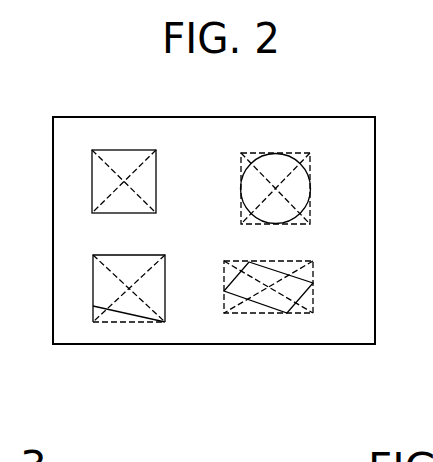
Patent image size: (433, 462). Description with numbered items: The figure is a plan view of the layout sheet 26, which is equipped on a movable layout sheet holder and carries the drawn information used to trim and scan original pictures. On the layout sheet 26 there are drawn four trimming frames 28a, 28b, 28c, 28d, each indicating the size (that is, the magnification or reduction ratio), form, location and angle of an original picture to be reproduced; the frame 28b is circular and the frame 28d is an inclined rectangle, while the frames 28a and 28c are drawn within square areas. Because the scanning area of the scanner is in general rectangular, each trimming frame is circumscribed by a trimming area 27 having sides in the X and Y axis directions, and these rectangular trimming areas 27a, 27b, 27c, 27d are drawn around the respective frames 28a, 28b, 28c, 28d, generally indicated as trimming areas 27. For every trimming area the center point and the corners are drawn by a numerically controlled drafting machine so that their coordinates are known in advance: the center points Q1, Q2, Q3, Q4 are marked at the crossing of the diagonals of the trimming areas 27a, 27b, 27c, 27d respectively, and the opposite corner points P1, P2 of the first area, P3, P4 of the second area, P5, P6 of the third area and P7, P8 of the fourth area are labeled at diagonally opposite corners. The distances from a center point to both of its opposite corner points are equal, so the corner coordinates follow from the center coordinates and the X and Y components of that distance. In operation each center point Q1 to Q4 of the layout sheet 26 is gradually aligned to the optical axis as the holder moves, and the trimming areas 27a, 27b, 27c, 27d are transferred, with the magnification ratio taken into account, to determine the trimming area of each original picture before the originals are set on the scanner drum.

The layout sheet 26 is at (337, 118).
The trimming area 27 is at (145, 150).
The trimming area 27a is at (110, 150).
The trimming area 27b is at (255, 153).
The trimming area 27c is at (128, 323).
The trimming area 27d is at (225, 313).
The trimming frame 28a is at (156, 185).
The trimming frame 28b is at (305, 167).
The trimming frame 28c is at (120, 255).
The trimming frame 28d is at (303, 279).
The corner point P1 is at (74, 148).
The corner point P2 is at (171, 213).
The corner point P3 is at (224, 148).
The corner point P4 is at (328, 225).
The corner point P5 is at (79, 255).
The corner point P6 is at (181, 326).
The corner point P7 is at (211, 261).
The corner point P8 is at (328, 321).
The center point Q1 is at (124, 182).
The center point Q2 is at (276, 189).
The center point Q3 is at (129, 288).
The center point Q4 is at (268, 288).